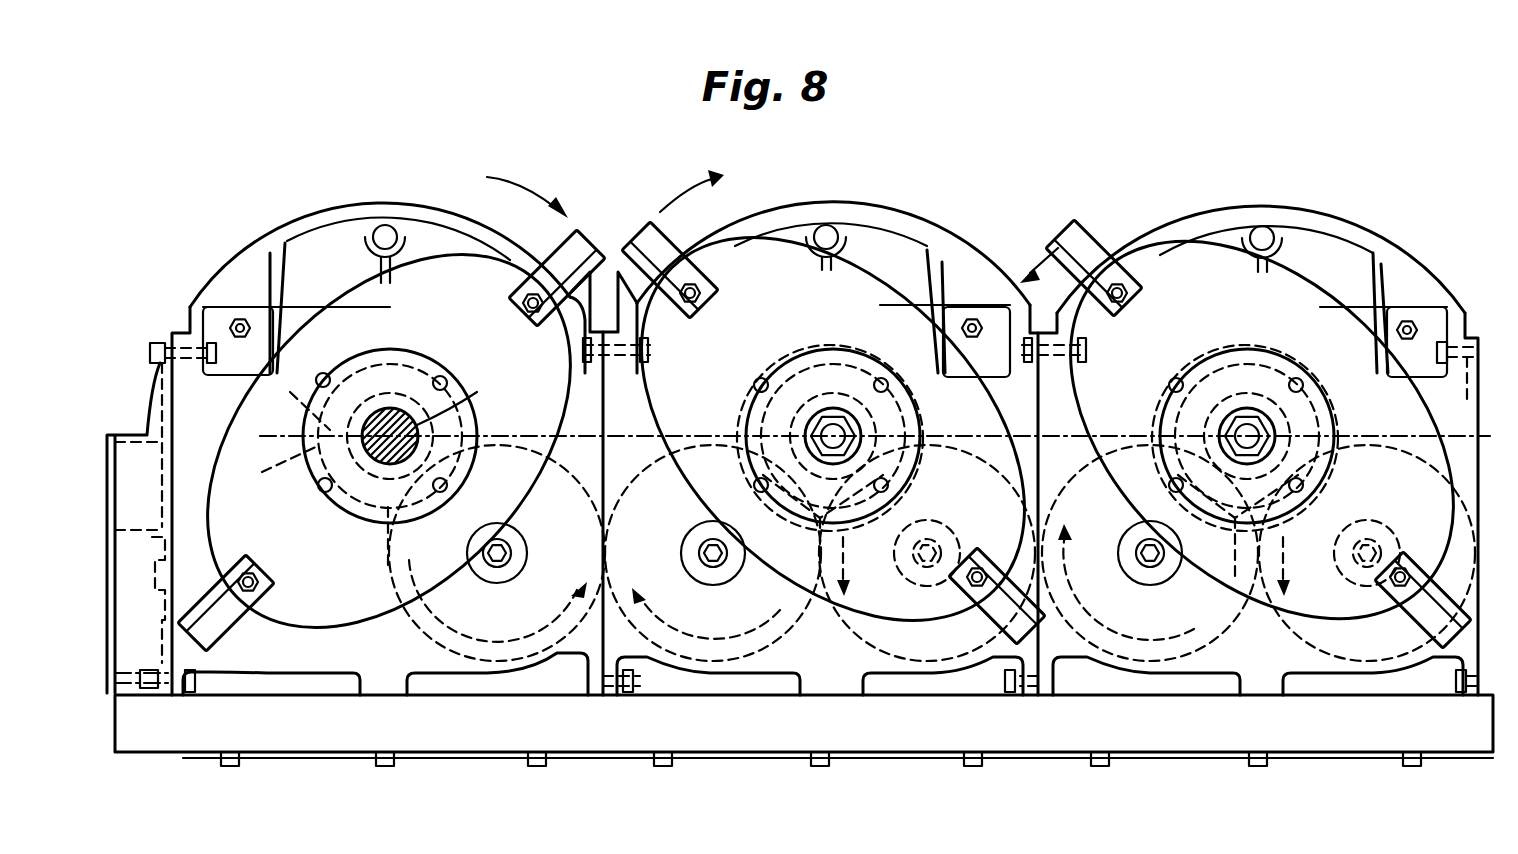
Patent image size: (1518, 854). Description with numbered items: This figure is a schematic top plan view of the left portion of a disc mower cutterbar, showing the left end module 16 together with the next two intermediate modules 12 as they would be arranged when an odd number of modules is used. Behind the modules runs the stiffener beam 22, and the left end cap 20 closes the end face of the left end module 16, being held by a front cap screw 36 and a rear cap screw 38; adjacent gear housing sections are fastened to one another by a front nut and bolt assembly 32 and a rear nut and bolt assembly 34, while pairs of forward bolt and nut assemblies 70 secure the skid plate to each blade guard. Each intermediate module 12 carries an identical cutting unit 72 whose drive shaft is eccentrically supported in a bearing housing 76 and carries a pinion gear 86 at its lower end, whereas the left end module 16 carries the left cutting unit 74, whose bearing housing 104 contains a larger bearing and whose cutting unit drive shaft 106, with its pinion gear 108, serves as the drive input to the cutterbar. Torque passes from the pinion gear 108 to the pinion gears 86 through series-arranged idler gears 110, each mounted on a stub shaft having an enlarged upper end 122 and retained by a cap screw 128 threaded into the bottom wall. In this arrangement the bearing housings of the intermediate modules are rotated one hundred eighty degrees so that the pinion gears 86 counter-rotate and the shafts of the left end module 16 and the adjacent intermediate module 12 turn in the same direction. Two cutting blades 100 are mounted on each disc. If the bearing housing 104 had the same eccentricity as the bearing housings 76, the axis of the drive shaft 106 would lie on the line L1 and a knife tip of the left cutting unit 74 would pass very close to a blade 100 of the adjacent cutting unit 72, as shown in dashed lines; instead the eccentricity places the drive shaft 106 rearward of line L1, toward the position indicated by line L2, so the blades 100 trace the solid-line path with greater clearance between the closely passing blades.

The intermediate module 12 is at (941, 205).
The left end module 16 is at (428, 196).
The left end cap 20 is at (135, 455).
The stiffener beam 22 is at (782, 733).
The front nut and bolt assembly 32 is at (622, 360).
The rear nut and bolt assembly 34 is at (636, 697).
The front cap screw 36 is at (158, 342).
The rear cap screw 38 is at (195, 695).
The forward bolt and nut assembly 70 is at (240, 318).
The cutting unit 72 is at (700, 492).
The left cutting unit 74 is at (522, 243).
The bearing housing 76 is at (757, 383).
The pinion gear 86 is at (878, 423).
The cutting blade 100 is at (613, 233).
The bearing housing 104 is at (432, 362).
The cutting unit drive shaft 106 is at (425, 430).
The pinion gear 108 is at (403, 393).
The idler gear 110 is at (385, 565).
The enlarged upper end 122 is at (522, 560).
The cap screw 128 is at (495, 566).
The line L1 is at (295, 402).
The line L2 is at (276, 463).